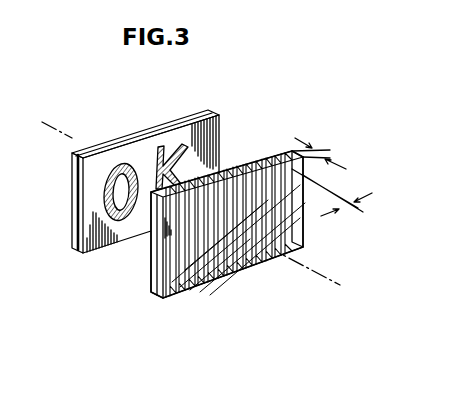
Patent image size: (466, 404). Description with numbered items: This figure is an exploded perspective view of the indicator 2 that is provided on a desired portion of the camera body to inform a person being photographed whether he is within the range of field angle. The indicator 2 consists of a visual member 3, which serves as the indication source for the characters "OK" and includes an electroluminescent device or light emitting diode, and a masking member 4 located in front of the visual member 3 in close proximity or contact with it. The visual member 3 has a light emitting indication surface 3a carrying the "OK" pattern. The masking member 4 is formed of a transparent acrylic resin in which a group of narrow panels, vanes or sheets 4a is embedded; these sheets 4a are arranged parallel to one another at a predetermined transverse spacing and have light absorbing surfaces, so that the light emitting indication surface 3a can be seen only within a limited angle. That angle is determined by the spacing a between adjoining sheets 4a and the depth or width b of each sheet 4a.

The indicator 2 is at (165, 315).
The visual member 3 is at (221, 114).
The light emitting indication surface 3a is at (72, 198).
The masking member 4 is at (304, 244).
The sheets 4a is at (205, 281).
The spacing between adjoining sheets a is at (356, 207).
The depth of each sheet b is at (329, 150).